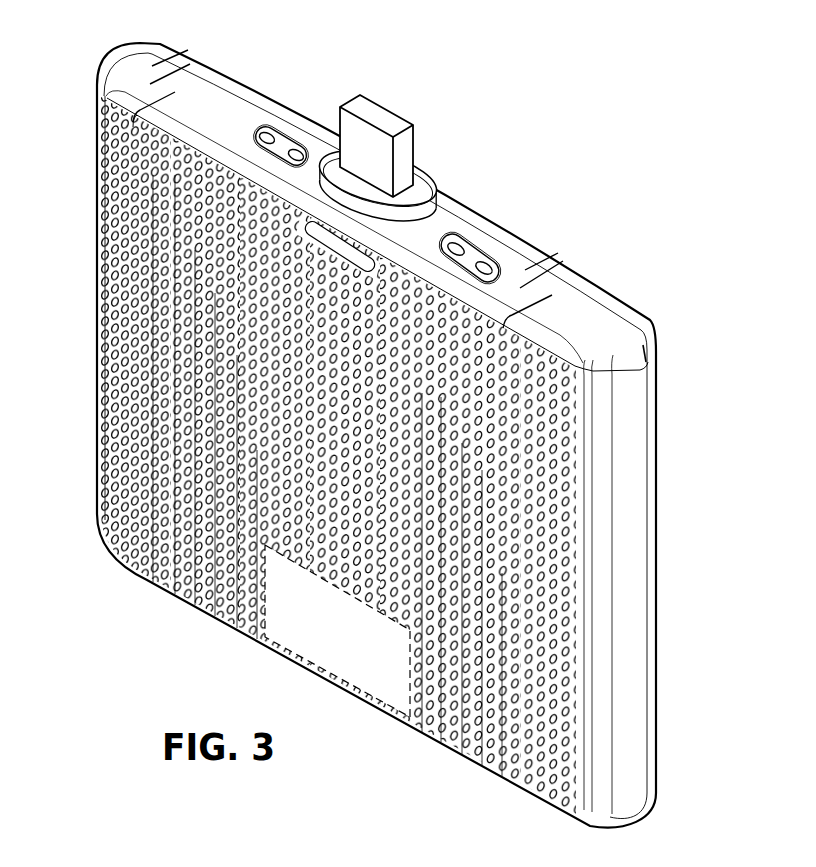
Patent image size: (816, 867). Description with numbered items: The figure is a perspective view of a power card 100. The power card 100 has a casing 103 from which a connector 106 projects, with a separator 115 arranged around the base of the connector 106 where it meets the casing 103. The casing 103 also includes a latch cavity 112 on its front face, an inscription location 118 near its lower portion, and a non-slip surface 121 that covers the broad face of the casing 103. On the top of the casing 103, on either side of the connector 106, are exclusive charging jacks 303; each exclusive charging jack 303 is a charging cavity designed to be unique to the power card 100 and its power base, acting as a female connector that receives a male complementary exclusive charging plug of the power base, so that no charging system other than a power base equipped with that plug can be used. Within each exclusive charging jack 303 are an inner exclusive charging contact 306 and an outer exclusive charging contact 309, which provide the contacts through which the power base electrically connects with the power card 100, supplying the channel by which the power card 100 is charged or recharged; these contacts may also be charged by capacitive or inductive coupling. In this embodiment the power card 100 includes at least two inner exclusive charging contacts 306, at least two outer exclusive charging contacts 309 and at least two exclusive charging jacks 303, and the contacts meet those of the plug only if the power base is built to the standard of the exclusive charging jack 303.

The power card 100 is at (385, 429).
The casing 103 is at (628, 432).
The connector 106 is at (377, 110).
The latch cavity 112 is at (320, 226).
The separator 115 is at (419, 172).
The inscription location 118 is at (285, 620).
The non-slip surface 121 is at (560, 597).
The exclusive charging jack 303 is at (287, 142).
The inner exclusive charging contact 306 is at (294, 156).
The outer exclusive charging contact 309 is at (267, 137).